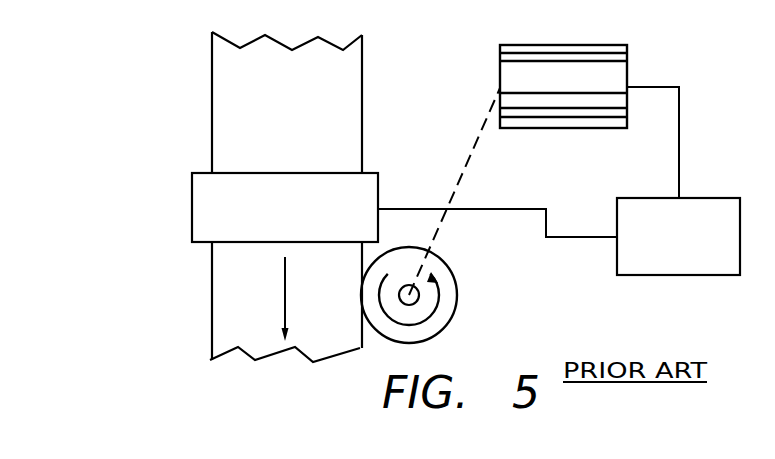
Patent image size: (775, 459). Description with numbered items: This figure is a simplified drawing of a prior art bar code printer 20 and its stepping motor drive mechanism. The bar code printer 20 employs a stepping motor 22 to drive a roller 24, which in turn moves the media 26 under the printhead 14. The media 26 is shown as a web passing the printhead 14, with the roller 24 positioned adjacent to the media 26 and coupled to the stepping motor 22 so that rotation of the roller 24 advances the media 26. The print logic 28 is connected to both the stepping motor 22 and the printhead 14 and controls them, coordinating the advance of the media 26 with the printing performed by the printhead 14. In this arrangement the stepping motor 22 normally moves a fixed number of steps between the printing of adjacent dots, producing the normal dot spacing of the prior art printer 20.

The printhead 14 is at (378, 197).
The bar code printer 20 is at (560, 283).
The stepping motor 22 is at (620, 72).
The roller 24 is at (459, 297).
The media 26 is at (340, 102).
The print logic 28 is at (693, 198).